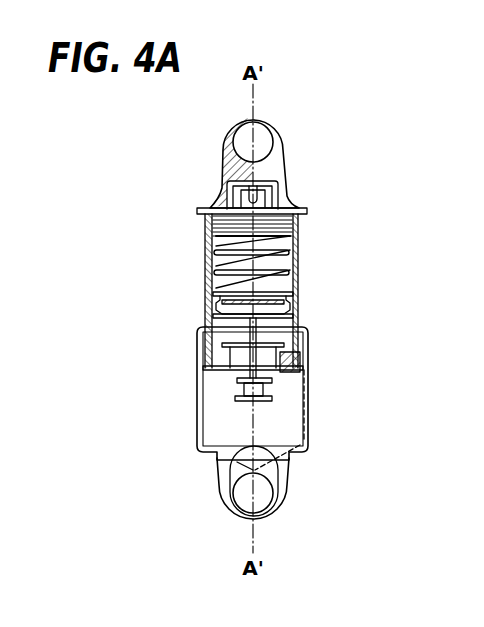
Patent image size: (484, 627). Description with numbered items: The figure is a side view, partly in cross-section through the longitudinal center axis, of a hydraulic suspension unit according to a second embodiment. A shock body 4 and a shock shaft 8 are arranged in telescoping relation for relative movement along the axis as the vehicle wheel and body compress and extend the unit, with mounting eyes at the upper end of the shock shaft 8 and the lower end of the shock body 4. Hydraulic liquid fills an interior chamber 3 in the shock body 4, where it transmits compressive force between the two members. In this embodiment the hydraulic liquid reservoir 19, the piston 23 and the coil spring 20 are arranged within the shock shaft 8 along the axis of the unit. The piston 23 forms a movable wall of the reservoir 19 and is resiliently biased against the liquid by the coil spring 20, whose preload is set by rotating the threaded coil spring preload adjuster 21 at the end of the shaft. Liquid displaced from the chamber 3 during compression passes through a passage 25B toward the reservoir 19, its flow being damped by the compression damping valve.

The coil spring preload adjuster 21 is at (268, 200).
The coil spring 20 is at (292, 252).
The shock shaft 8 is at (299, 287).
The piston 23 is at (296, 303).
The hydraulic liquid reservoir 19 is at (223, 332).
The passage 25B is at (300, 360).
The shock body 4 is at (307, 400).
The interior chamber 3 is at (270, 436).